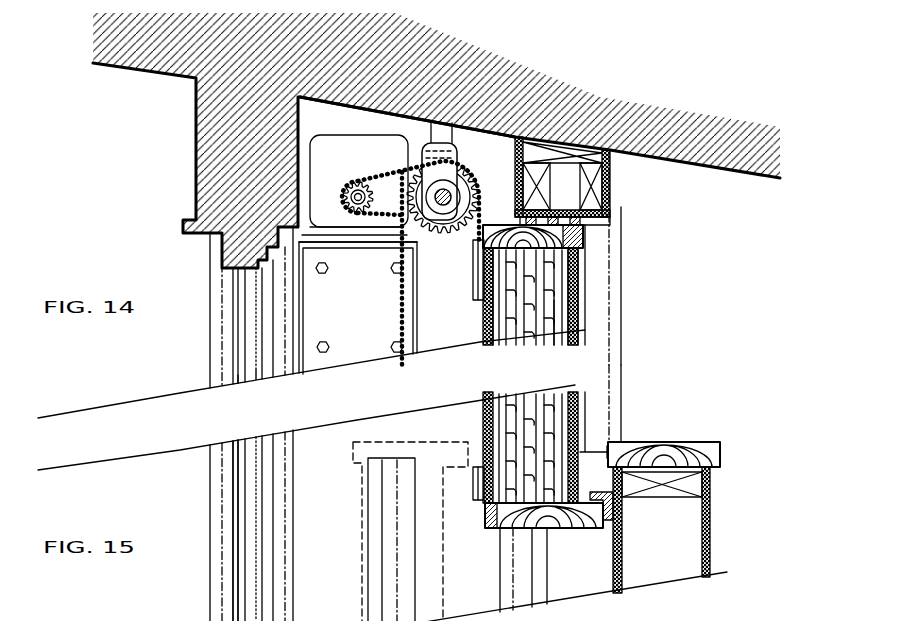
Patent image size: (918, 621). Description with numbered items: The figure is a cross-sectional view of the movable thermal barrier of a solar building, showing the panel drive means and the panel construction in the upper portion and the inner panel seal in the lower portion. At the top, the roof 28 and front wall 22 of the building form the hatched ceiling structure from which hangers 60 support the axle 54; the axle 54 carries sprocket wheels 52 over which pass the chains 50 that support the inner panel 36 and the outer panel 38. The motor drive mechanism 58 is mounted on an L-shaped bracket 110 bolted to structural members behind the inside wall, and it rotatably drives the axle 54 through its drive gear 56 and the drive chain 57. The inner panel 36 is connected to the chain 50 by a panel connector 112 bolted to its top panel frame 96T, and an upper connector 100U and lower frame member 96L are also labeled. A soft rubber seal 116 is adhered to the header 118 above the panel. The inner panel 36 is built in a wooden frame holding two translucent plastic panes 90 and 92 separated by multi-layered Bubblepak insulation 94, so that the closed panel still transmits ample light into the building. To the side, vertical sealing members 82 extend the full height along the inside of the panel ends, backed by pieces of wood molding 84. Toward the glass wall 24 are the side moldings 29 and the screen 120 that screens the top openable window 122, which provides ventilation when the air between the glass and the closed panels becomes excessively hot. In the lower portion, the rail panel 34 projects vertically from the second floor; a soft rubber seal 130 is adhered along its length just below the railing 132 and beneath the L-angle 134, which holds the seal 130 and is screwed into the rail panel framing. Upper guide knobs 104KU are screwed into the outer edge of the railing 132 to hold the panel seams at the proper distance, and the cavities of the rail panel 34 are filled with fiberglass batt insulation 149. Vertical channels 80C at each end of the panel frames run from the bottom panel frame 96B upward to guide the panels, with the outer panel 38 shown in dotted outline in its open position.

In FIG. 14, the front wall 22 is at (275, 125).
In FIG. 14, the roof 28 is at (388, 90).
In FIG. 14, the hangers 60 is at (440, 128).
In FIG. 14, the sprocket wheels 52 is at (415, 180).
In FIG. 14, the motor drive mechanism 58 is at (351, 175).
In FIG. 14, the drive gear 56 is at (362, 205).
In FIG. 14, the drive chain 57 is at (382, 224).
In FIG. 14, the axle 54 is at (379, 234).
In FIG. 14, the chains 50 is at (392, 318).
In FIG. 14, the L-shaped bracket 110 is at (364, 363).
In FIG. 14, the panel connector 112 is at (468, 272).
In FIG. 14, the upper chain connector 100U is at (466, 244).
In FIG. 14, the translucent plastic pane 92 is at (487, 313).
In FIG. 14, the inner panel 36 is at (517, 332).
In FIG. 15, the inner panel 36 is at (532, 387).
In FIG. 14, the header 118 is at (563, 182).
In FIG. 14, the soft rubber seal 116 is at (592, 222).
In FIG. 14, the top panel frame 96T is at (555, 234).
In FIG. 14, the vertical sealing members 82 is at (595, 257).
In FIG. 14, the wood molding 84 is at (617, 283).
In FIG. 14, the translucent plastic pane 90 is at (580, 310).
In FIG. 14, the lower rail edge 96L is at (592, 318).
In FIG. 14, the Bubblepak plastic sheet insulation 94 is at (560, 330).
In FIG. 14, the side moldings 29 is at (229, 337).
In FIG. 15, the side moldings 29 is at (229, 581).
In FIG. 14, the screen 120 is at (259, 389).
In FIG. 14, the top openable window 122 is at (240, 394).
In FIG. 15, the upper guide knobs 104KU is at (588, 441).
In FIG. 15, the L-angle 134 is at (599, 481).
In FIG. 15, the railing 132 is at (664, 453).
In FIG. 15, the glass wall 24 is at (237, 526).
In FIG. 15, the outer panel 38 is at (351, 521).
In FIG. 15, the bottom panel frame 96B is at (513, 517).
In FIG. 15, the vertical channels 80C is at (523, 558).
In FIG. 15, the soft rubber seal 130 is at (607, 525).
In FIG. 15, the fiberglass batt insulation 149 is at (647, 568).
In FIG. 15, the rail panel 34 is at (668, 550).